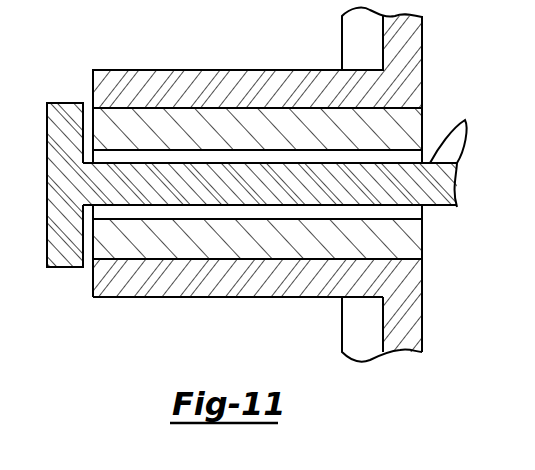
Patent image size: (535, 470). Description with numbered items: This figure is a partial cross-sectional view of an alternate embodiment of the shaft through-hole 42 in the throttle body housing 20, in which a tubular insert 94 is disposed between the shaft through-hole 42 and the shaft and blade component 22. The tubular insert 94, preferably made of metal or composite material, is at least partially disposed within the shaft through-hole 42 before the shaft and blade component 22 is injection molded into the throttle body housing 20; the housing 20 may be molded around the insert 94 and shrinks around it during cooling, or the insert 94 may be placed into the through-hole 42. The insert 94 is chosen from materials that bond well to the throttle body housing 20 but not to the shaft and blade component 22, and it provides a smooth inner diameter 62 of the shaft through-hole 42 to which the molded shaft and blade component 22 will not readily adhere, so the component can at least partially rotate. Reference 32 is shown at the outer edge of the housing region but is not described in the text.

The throttle body housing 20 is at (355, 39).
The shaft and blade component 22 is at (67, 118).
The outer wall 32 is at (423, 58).
The shaft through-hole 42 is at (230, 108).
The shaft through-hole inner diameter 62 is at (211, 220).
The tubular insert 94 is at (168, 122).